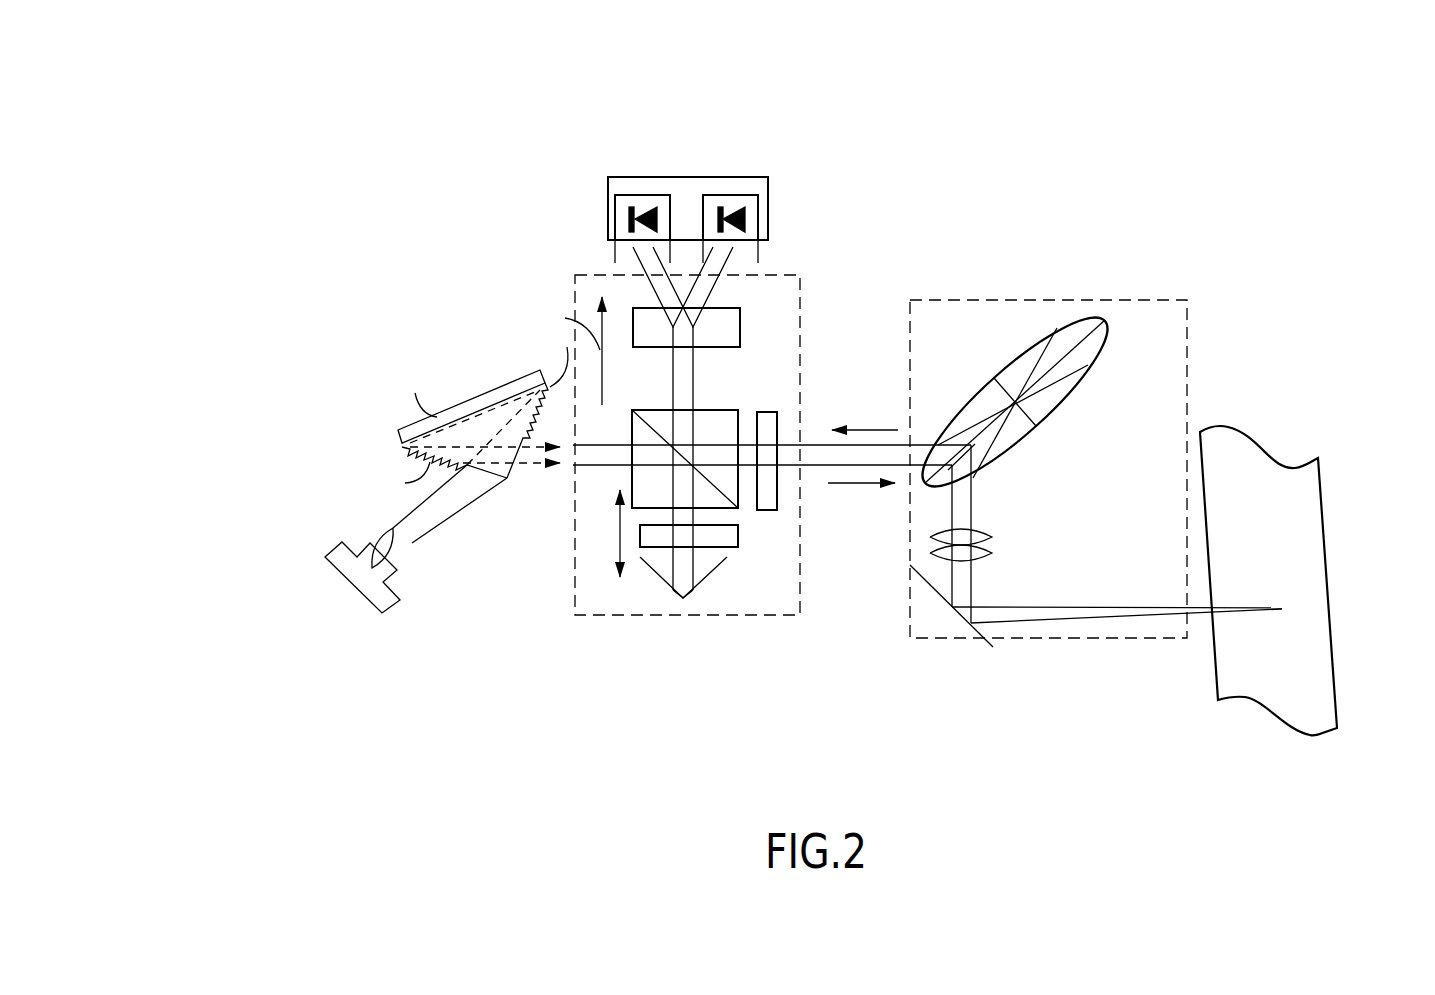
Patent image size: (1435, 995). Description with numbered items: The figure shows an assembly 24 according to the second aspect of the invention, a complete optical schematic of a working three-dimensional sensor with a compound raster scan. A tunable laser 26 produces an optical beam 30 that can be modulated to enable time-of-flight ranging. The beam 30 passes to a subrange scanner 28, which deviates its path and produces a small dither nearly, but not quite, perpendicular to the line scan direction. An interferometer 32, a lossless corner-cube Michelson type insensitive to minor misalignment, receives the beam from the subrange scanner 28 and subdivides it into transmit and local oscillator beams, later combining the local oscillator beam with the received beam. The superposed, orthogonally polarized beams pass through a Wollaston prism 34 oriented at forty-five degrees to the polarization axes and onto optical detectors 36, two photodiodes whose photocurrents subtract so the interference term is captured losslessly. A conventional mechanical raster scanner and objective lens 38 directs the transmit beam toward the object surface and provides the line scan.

The assembly 24 is at (1037, 60).
The tunable laser 26 is at (378, 612).
The subrange scanner 28 is at (342, 260).
The optical beam 30 is at (477, 435).
The interferometer 32 is at (597, 616).
The Wollaston prism 34 is at (731, 307).
The optical detectors 36 is at (690, 177).
The scanner and objective lens 38 is at (995, 300).